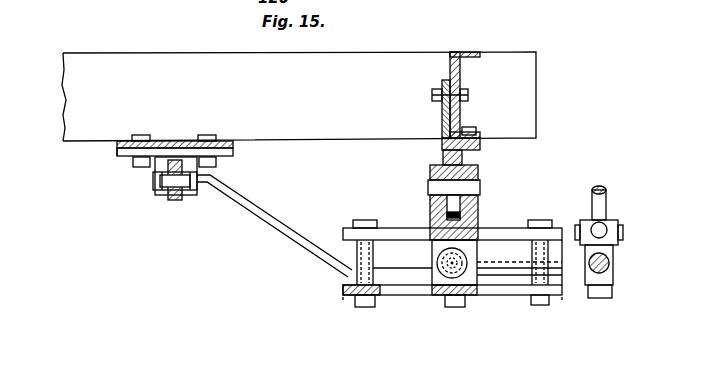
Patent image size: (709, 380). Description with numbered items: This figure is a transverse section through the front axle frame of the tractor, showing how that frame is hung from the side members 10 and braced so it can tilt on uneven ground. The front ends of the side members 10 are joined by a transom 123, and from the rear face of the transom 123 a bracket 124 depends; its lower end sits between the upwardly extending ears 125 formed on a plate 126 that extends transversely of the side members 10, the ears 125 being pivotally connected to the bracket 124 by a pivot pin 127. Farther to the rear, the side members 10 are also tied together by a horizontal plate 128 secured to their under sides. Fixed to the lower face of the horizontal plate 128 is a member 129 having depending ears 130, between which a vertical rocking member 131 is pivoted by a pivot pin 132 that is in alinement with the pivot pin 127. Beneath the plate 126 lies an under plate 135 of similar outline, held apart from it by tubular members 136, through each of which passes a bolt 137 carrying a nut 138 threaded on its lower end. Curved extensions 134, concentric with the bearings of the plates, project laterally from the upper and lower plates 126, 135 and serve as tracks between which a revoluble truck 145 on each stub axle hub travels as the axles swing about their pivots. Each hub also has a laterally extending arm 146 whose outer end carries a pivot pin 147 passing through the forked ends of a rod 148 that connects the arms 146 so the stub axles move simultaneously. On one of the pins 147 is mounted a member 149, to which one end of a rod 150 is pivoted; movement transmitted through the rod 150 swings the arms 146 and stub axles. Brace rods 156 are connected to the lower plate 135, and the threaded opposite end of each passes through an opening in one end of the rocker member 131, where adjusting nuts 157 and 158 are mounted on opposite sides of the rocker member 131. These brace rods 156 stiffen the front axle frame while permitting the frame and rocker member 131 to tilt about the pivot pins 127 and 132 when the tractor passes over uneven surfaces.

The side member 10 is at (130, 65).
The transom 123 is at (462, 52).
The bracket 124 is at (443, 125).
The ear 125 is at (431, 168).
The plate 126 is at (503, 225).
The pivot pin 127 is at (481, 192).
The horizontal plate 128 is at (172, 147).
The member 129 is at (122, 155).
The depending ear 130 is at (158, 168).
The rocking member 131 is at (175, 200).
The pivot pin 132 is at (166, 194).
The curved extension 134 is at (398, 227).
The under plate 135 is at (500, 295).
The tubular member 136 is at (374, 256).
The bolt 137 is at (365, 307).
The nut 138 is at (352, 301).
The revoluble truck 145 is at (434, 268).
The arm 146 is at (480, 266).
The pivot pin 147 is at (615, 291).
The rod 148 is at (615, 263).
The member 149 is at (625, 233).
The rod 150 is at (607, 204).
The brace rod 156 is at (275, 219).
The adjusting nut 157 is at (162, 191).
The adjusting nut 158 is at (191, 192).